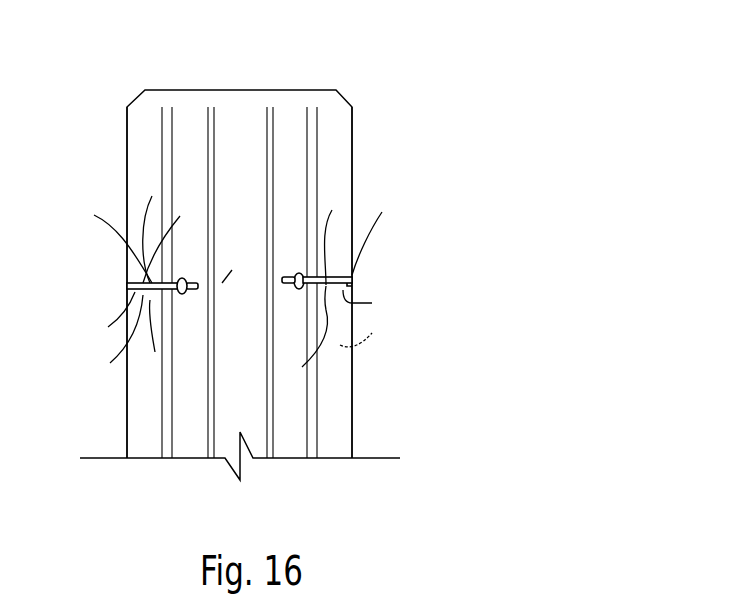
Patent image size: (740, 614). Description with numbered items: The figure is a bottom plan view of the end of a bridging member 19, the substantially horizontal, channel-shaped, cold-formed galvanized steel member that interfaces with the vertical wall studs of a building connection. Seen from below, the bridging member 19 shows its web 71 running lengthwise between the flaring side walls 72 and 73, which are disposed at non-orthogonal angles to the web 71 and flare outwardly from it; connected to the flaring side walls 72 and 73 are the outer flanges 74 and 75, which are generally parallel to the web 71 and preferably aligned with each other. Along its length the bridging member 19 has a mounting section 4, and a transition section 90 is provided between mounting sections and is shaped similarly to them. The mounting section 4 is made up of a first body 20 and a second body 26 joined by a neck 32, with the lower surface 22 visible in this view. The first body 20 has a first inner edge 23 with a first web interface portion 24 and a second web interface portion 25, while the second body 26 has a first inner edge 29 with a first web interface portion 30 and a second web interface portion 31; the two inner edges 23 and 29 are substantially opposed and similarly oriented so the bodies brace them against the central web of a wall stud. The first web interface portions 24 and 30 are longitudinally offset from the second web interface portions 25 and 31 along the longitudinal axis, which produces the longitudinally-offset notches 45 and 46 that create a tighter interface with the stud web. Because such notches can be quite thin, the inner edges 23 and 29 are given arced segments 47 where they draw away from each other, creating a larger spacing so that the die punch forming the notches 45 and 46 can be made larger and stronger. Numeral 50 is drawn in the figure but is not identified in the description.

The mounting section 4 is at (362, 262).
The bridging member 19 is at (362, 416).
The first body 20 is at (173, 336).
The lower surface 22 is at (373, 335).
The first inner edge 23 is at (238, 319).
The first web interface portion 24 is at (107, 346).
The second web interface portion 25 is at (302, 337).
The second body 26 is at (179, 239).
The first inner edge 29 is at (235, 237).
The first web interface portion 30 is at (163, 227).
The second web interface portion 31 is at (344, 236).
The neck 32 is at (240, 265).
The notch 45 is at (350, 284).
The notch 46 is at (128, 283).
The arced segment 47 is at (185, 276).
The groove 50 is at (325, 98).
The web 71 is at (240, 133).
The flaring side wall 72 is at (288, 118).
The flaring side wall 73 is at (180, 113).
The outer flange 74 is at (138, 152).
The outer flange 75 is at (338, 153).
The transition section 90 is at (337, 443).